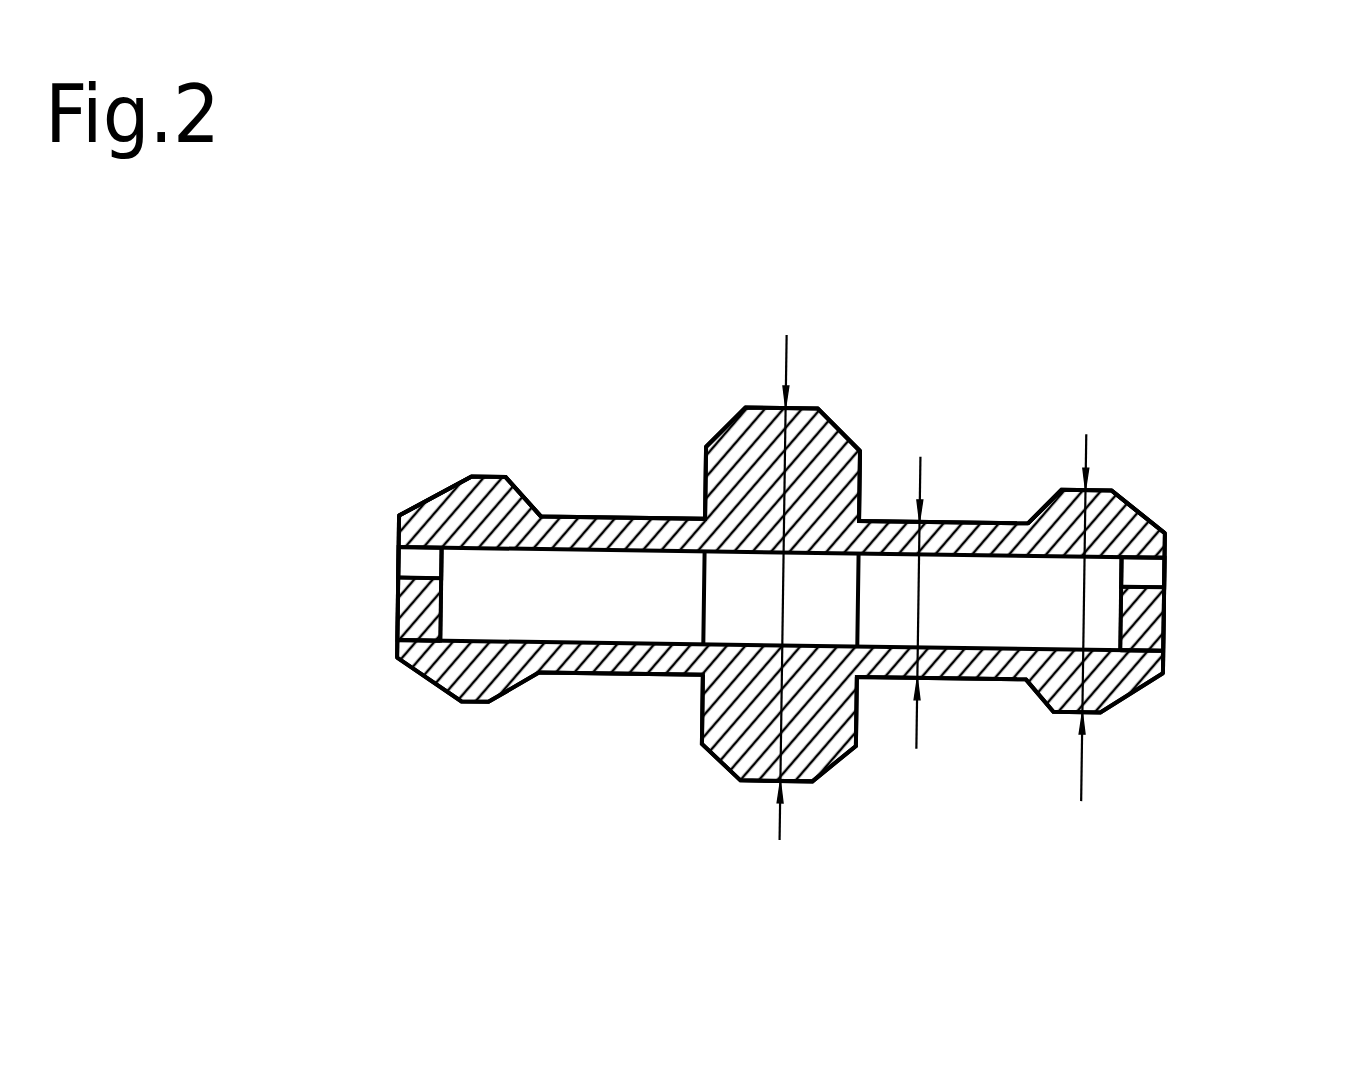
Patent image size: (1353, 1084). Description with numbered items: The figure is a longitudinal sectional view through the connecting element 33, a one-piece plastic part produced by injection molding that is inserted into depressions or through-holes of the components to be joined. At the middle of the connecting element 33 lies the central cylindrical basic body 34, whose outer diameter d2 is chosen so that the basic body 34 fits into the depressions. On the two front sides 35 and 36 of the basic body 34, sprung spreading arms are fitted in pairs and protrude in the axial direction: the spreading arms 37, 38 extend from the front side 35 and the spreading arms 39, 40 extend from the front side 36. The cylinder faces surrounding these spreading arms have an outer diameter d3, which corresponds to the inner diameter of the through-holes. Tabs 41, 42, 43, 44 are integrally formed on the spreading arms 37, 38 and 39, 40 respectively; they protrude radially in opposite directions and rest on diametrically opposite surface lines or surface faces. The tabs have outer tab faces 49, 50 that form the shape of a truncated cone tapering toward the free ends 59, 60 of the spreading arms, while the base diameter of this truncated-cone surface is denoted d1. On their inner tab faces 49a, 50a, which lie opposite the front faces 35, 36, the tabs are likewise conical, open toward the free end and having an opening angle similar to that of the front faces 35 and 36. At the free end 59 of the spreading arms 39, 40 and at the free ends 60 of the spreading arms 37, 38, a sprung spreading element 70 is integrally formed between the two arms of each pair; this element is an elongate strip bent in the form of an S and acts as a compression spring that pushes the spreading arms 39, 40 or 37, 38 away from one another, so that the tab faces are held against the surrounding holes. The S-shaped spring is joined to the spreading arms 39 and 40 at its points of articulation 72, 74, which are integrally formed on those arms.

The connecting element 33 is at (604, 938).
The central cylindrical basic body 34 is at (798, 442).
The front side 35 is at (718, 432).
The front side 36 is at (840, 437).
The spreading arm 37 is at (594, 514).
The spreading arm 38 is at (594, 672).
The spreading arm 39 is at (958, 520).
The spreading arm 40 is at (972, 682).
The tab 41 is at (438, 513).
The tab 42 is at (463, 685).
The tab 43 is at (1096, 508).
The tab 44 is at (1118, 678).
The outer tab face 49 is at (1134, 507).
The inner tab face 49a is at (521, 489).
The outer tab face 50 is at (410, 500).
The inner tab face 50a is at (1041, 503).
The free end 59 is at (1172, 542).
The free end 60 is at (397, 648).
The sprung spreading element 70 is at (397, 601).
The point of articulation 72 is at (397, 639).
The point of articulation 74 is at (397, 548).
The cone base diameter d1 is at (1105, 620).
The outer diameter of the basic body d2 is at (811, 601).
The outer diameter of the cylinder faces d3 is at (895, 612).